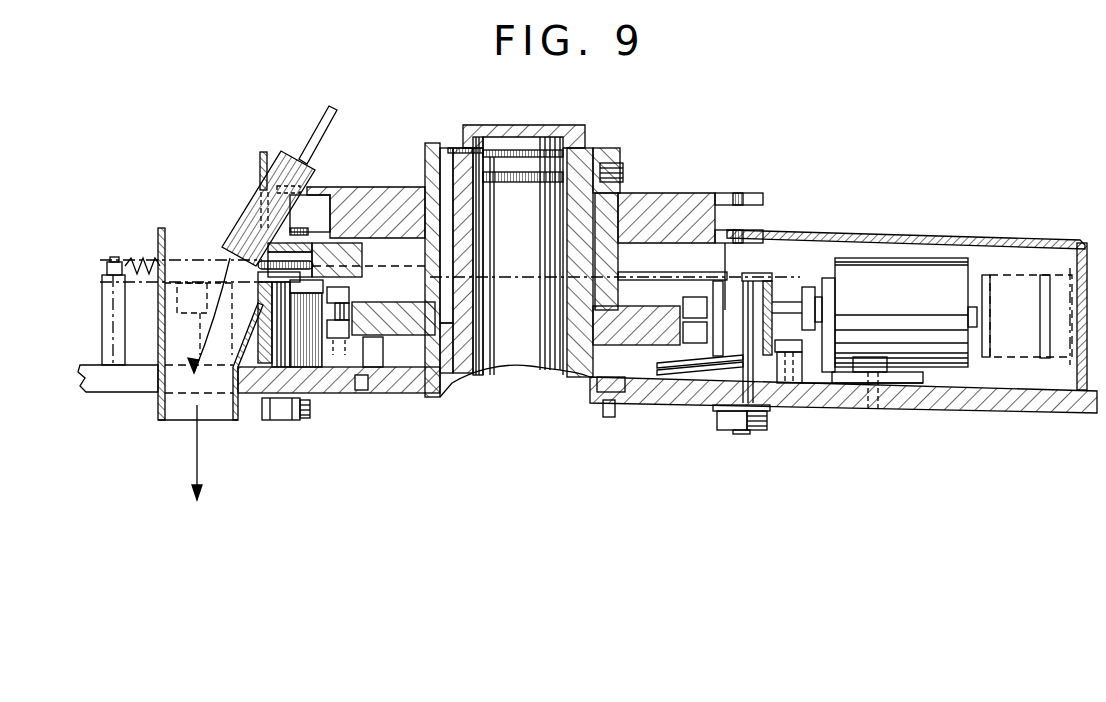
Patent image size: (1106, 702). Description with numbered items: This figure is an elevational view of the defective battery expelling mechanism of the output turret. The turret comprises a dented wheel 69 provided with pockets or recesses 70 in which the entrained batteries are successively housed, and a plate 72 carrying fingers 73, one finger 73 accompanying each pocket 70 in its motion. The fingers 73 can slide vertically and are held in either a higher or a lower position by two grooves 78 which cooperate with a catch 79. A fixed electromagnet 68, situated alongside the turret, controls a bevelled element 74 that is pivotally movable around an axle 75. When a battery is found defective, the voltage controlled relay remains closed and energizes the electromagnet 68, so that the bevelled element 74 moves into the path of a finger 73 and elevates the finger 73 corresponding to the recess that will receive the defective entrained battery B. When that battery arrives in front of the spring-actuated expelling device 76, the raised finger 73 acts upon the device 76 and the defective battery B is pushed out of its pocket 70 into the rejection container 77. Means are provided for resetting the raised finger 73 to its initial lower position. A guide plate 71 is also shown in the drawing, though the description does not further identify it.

The electromagnet 68 is at (917, 272).
The dented wheel 69 is at (388, 198).
The pocket or recess 70 is at (309, 205).
The guide plate 71 is at (260, 158).
The plate 72 is at (398, 330).
The finger 73 is at (342, 337).
The bevelled element 74 is at (688, 363).
The axle 75 is at (733, 434).
The expelling device 76 is at (367, 263).
The container 77 is at (170, 243).
The groove 78 is at (351, 325).
The catch 79 is at (350, 318).
The defective entrained battery B is at (250, 215).